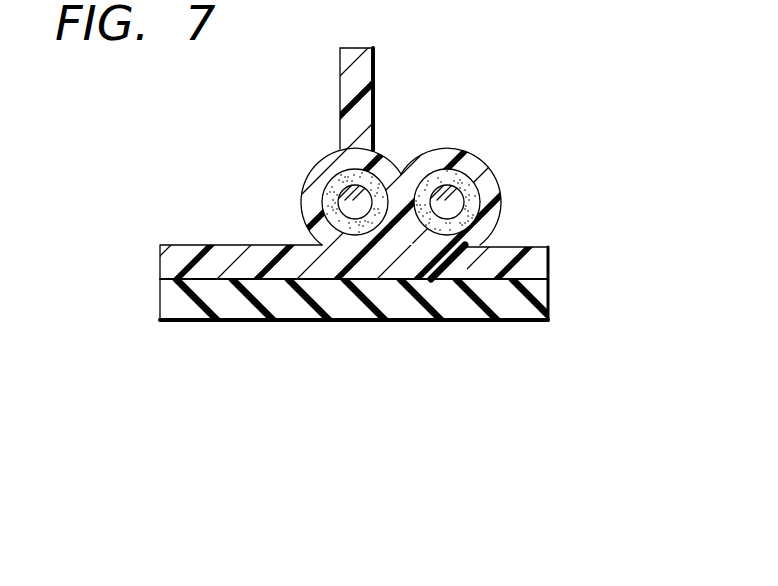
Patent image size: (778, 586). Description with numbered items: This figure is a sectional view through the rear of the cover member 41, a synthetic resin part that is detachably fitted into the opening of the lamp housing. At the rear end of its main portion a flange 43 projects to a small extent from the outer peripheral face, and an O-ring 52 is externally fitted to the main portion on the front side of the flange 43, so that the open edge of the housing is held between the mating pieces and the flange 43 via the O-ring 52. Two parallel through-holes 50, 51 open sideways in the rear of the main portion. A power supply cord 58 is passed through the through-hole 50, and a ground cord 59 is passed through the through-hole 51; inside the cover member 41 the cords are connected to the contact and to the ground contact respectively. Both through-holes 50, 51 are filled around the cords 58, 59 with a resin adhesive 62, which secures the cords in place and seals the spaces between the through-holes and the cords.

The cover member 41 is at (178, 243).
The flange 43 is at (535, 247).
The through-hole 50 is at (328, 190).
The through-hole 51 is at (468, 186).
The O-ring 52 is at (548, 297).
The power supply cord 58 is at (352, 207).
The ground cord 59 is at (443, 207).
The resin adhesive 62 is at (382, 166).